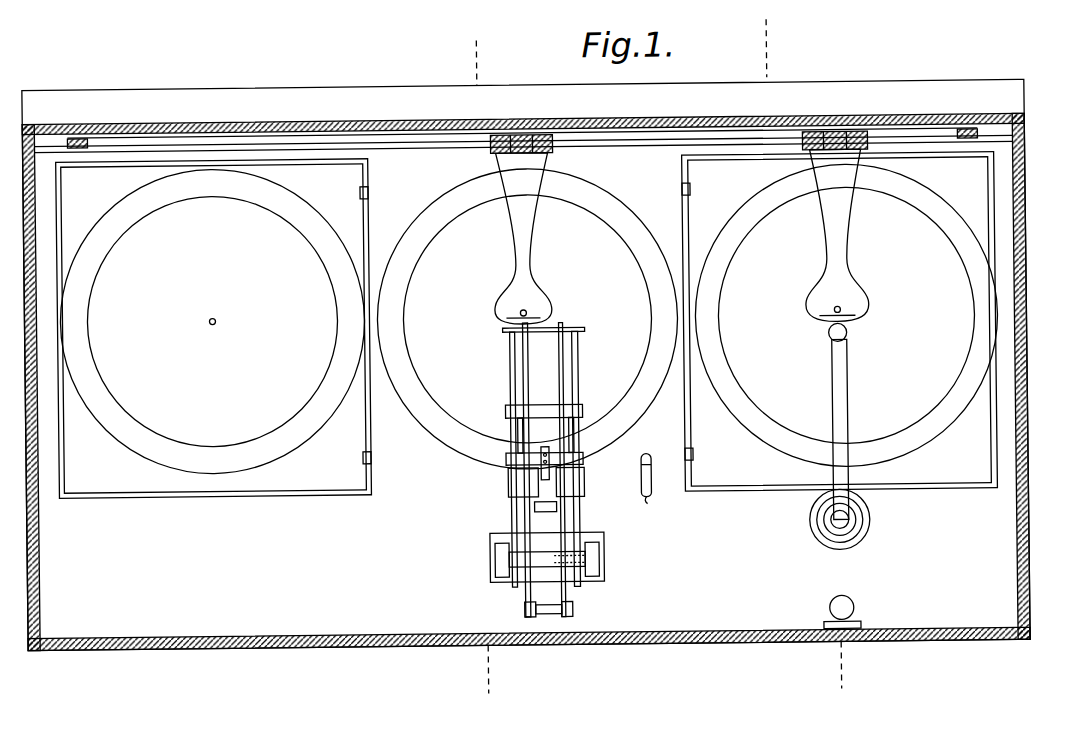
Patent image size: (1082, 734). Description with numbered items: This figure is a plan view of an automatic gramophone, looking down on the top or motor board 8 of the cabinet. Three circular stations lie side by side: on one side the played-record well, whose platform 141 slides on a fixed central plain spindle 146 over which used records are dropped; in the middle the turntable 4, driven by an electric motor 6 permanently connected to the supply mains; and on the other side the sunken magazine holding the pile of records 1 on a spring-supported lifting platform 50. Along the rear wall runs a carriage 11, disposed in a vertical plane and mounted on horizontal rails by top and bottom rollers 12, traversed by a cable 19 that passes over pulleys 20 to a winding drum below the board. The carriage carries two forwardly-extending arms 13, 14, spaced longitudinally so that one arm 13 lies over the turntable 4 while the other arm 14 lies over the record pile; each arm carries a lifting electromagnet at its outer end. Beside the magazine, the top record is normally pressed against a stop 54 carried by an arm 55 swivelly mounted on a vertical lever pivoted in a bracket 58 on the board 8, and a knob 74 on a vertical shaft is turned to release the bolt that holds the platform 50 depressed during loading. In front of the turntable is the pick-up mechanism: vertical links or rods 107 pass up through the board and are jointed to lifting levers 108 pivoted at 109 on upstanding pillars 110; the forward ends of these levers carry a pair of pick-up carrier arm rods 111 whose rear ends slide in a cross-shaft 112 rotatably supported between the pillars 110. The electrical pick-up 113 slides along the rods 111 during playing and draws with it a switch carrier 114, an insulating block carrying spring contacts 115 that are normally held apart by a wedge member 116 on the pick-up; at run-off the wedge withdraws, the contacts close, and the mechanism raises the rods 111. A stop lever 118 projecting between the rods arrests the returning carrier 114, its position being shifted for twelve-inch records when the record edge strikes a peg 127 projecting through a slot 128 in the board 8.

The record 1 is at (110, 250).
The turntable 4 is at (598, 194).
The electric motor 6 is at (494, 373).
The top or motor board 8 is at (370, 633).
The carriage 11 is at (560, 140).
The rollers 12 is at (512, 135).
The arm 13 is at (530, 247).
The arm 14 is at (842, 238).
The cable 19 is at (224, 134).
The pulleys 20 is at (82, 136).
The lifting platform 50 is at (975, 193).
The stop 54 is at (856, 339).
The arm 55 is at (848, 416).
The bracket 58 is at (866, 523).
The knob 74 is at (846, 601).
The vertical links or rods 107 is at (572, 618).
The lifting levers 108 is at (530, 392).
The pivot 109 is at (590, 560).
The upstanding pillars or brackets 110 is at (500, 561).
The pick-up carrier arm rods 111 is at (512, 372).
The cross-shaft 112 is at (540, 571).
The electrical pick-up or reproducer 113 is at (537, 427).
The switch carrier 114 is at (583, 490).
The spring contacts 115 is at (548, 472).
The wedge member 116 is at (541, 473).
The stop lever 118 is at (538, 508).
The peg 127 is at (648, 454).
The slot 128 is at (671, 511).
The platform 141 is at (74, 496).
The fixed central plain spindle 146 is at (217, 316).